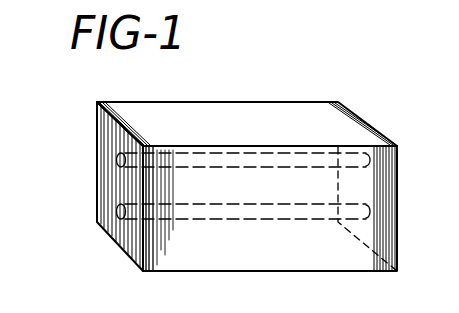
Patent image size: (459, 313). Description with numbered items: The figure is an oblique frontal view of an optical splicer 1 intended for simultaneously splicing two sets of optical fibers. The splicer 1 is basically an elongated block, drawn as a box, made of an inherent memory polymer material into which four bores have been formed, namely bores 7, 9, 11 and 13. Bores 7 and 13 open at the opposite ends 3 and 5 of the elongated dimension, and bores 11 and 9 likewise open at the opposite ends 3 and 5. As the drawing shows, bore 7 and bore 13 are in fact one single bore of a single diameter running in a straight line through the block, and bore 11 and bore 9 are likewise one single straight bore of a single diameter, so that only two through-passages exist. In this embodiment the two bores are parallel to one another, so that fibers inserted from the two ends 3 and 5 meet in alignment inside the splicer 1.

The optical splicer 1 is at (253, 120).
The end 3 is at (120, 232).
The end 5 is at (398, 168).
The bore 7 is at (118, 212).
The bore 9 is at (372, 125).
The bore 11 is at (118, 157).
The bore 13 is at (372, 212).